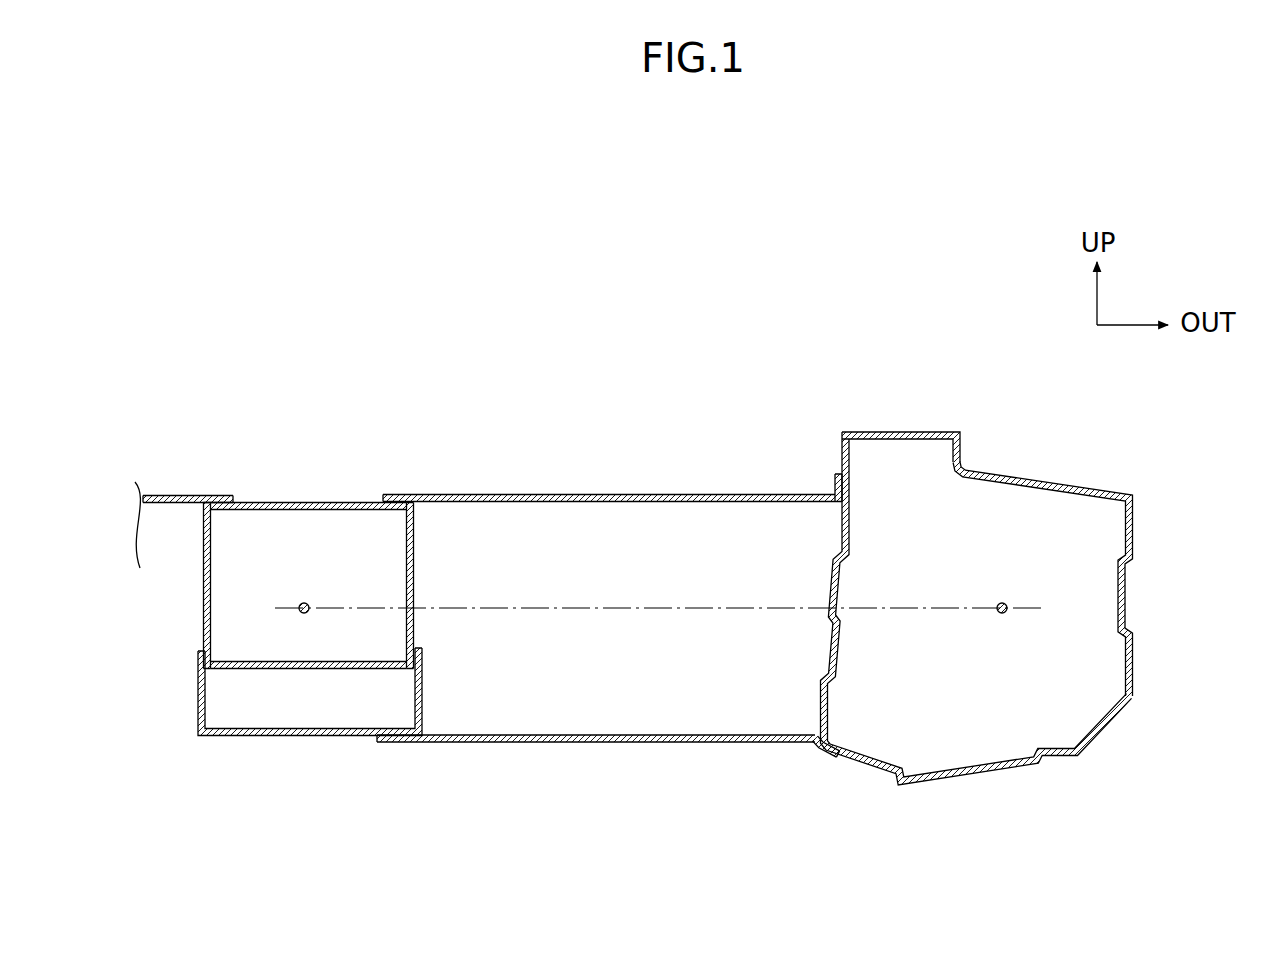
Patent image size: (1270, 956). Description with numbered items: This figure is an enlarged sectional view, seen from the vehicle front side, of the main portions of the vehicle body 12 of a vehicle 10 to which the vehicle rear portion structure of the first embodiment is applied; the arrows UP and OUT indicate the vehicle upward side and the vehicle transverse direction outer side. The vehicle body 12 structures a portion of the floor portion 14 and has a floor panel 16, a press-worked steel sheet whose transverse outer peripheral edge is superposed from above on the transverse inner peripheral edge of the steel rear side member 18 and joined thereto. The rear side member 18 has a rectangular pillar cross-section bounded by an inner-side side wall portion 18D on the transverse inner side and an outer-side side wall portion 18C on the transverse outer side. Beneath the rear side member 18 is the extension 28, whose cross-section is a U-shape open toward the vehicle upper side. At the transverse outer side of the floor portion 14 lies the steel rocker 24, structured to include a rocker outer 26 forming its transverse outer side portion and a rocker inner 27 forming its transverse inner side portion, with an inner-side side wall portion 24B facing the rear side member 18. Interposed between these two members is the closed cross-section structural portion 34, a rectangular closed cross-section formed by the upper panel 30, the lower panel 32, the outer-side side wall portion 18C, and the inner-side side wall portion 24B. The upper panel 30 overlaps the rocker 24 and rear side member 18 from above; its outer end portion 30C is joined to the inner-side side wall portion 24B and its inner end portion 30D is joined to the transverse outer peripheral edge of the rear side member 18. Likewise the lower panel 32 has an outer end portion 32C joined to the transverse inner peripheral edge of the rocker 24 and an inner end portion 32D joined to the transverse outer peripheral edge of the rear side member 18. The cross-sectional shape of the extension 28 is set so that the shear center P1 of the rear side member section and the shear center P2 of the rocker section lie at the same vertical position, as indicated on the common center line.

The vehicle 10 is at (763, 333).
The vehicle body 12 is at (763, 333).
The floor portion 14 is at (328, 393).
The floor panel 16 is at (183, 495).
The rear side member 18 is at (325, 480).
The outer-side side wall portion 18C is at (415, 563).
The inner-side side wall portion 18D is at (203, 595).
The rocker 24 is at (1005, 438).
The inner-side side wall portion 24B is at (840, 577).
The rocker outer 26 is at (1130, 486).
The rocker inner 27 is at (855, 432).
The extension 28 is at (272, 737).
The upper panel 30 is at (505, 490).
The end portion 30C is at (825, 476).
The end portion 30D is at (395, 494).
The lower panel 32 is at (608, 746).
The end portion 32C is at (826, 758).
The end portion 32D is at (395, 743).
The closed cross-section structural portion 34 is at (648, 402).
The shear center P1 is at (306, 603).
The shear center P2 is at (1002, 603).